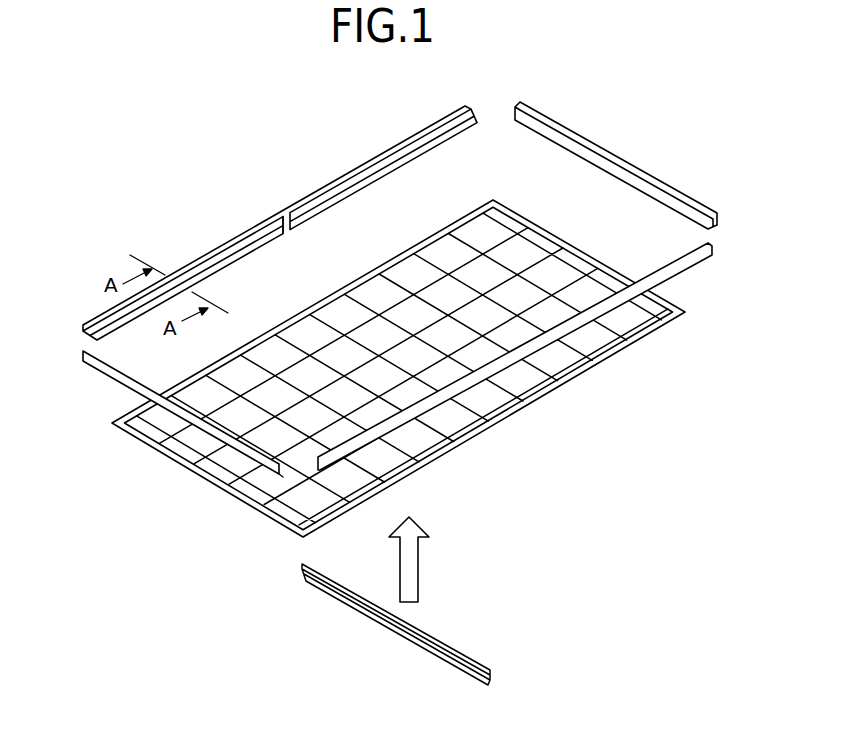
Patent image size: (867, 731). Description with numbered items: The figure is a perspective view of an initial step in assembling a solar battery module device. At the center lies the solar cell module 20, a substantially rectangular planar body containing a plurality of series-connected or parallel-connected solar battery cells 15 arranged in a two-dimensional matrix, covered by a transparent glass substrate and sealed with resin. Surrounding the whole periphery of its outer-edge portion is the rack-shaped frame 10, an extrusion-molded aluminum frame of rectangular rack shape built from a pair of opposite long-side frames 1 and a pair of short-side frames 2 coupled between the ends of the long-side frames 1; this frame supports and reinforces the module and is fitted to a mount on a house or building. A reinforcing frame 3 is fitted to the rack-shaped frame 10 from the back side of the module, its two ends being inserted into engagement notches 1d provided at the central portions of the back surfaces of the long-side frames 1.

The long-side frame 1 is at (623, 308).
The engagement notch 1d is at (282, 224).
The short-side frame 2 is at (196, 430).
The reinforcing frame 3 is at (402, 632).
The rack-shaped frame 10 is at (280, 212).
The solar battery cell 15 is at (398, 368).
The solar cell module 20 is at (450, 418).